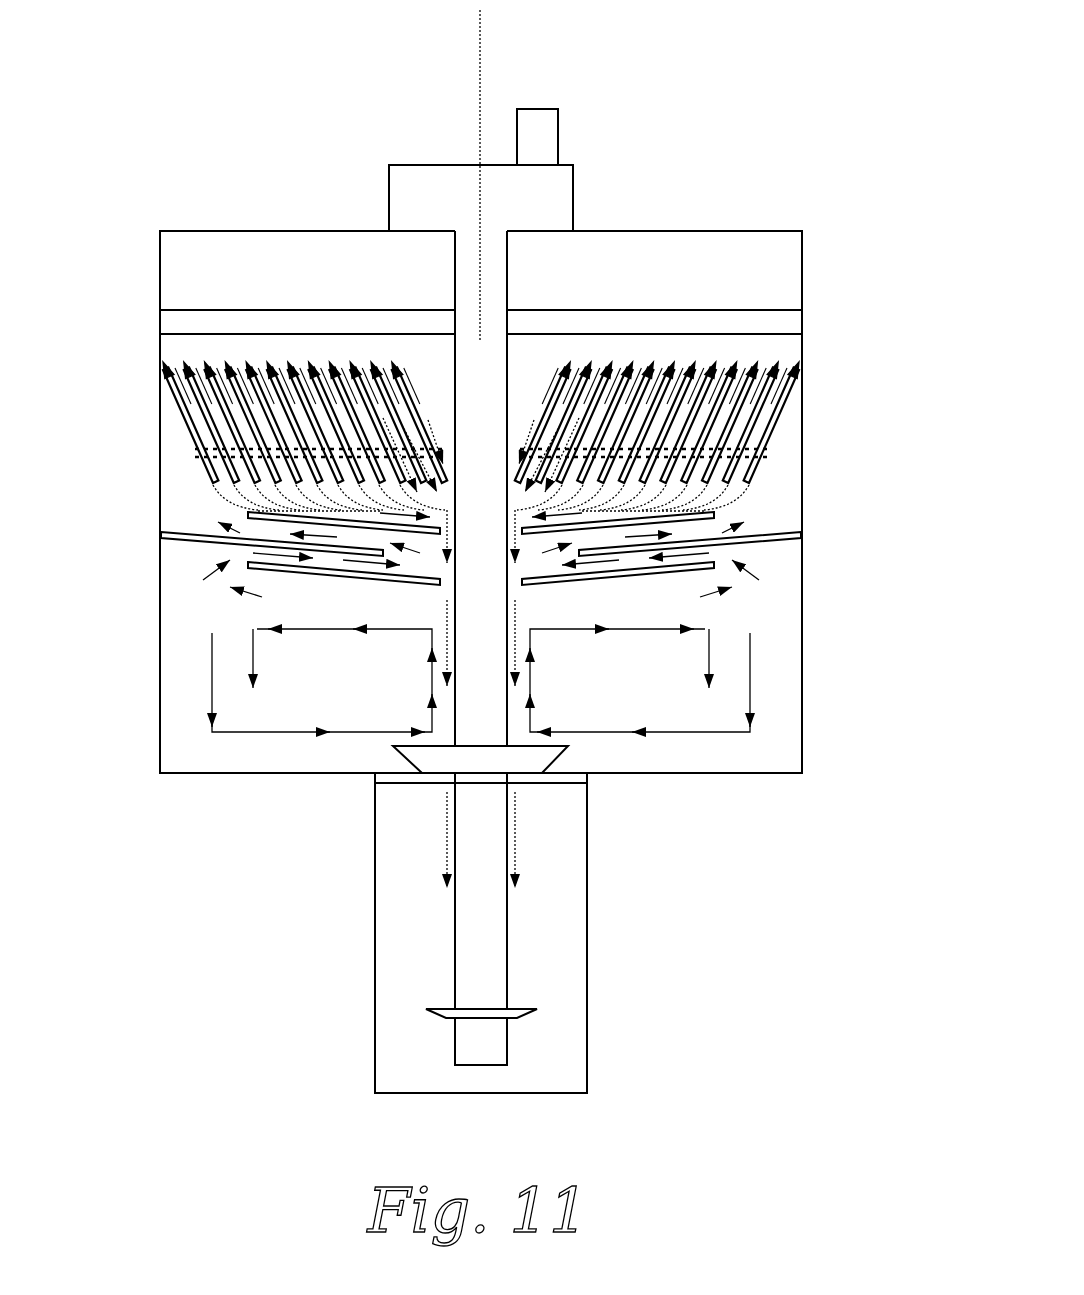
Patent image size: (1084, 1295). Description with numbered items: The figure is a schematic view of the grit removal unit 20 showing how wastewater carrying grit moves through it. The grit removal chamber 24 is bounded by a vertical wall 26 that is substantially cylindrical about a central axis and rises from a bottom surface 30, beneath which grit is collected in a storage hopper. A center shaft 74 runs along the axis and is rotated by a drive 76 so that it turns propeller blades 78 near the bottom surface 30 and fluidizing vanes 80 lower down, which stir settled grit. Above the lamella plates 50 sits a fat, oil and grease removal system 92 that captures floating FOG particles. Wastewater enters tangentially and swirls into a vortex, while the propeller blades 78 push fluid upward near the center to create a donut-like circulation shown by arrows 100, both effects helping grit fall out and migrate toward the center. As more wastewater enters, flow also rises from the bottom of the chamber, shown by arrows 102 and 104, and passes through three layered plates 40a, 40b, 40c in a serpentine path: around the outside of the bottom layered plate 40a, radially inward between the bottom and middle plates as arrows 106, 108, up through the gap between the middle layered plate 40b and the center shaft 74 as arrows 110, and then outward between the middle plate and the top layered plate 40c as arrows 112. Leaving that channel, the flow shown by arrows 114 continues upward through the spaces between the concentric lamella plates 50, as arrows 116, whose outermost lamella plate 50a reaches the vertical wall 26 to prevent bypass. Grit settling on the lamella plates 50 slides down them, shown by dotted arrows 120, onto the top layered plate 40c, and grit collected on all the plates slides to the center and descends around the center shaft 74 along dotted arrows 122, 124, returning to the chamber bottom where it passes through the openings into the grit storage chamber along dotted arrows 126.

The grit removal unit 20 is at (718, 143).
The grit removal chamber 24 is at (812, 445).
The vertical wall 26 is at (482, 45).
The bottom surface 30 is at (250, 775).
The bottom layered plate 40a is at (640, 573).
The middle layered plate 40b is at (185, 535).
The top layered plate 40c is at (250, 514).
The lamella plates 50 is at (738, 425).
The outermost lamella plate 50a is at (213, 483).
The center shaft 74 is at (468, 367).
The drive 76 is at (540, 137).
The propeller blades 78 is at (553, 757).
The fluidizing vanes 80 is at (517, 1018).
The FOG removal system 92 is at (783, 316).
The arrows (donut-like flow element) 100 is at (212, 685).
The arrows (upward flow) 102 is at (262, 597).
The arrows (upward flow) 104 is at (210, 556).
The arrows (radially inward flow) 106 is at (273, 555).
The arrows (radially inward flow) 108 is at (362, 562).
The arrows (flow up through gap) 110 is at (418, 550).
The arrows (flow between middle and top plates) 112 is at (648, 530).
The arrows (flow exiting layered plates) 114 is at (232, 528).
The arrows (flow through lamella plates) 116 is at (163, 372).
The dotted arrows (grit sliding down lamella plates) 120 is at (195, 485).
The dotted arrows (grit descending around center shaft) 122 is at (515, 542).
The dotted arrows (grit descending around center shaft) 124 is at (448, 660).
The dotted arrows (grit passing into storage chamber) 126 is at (445, 840).